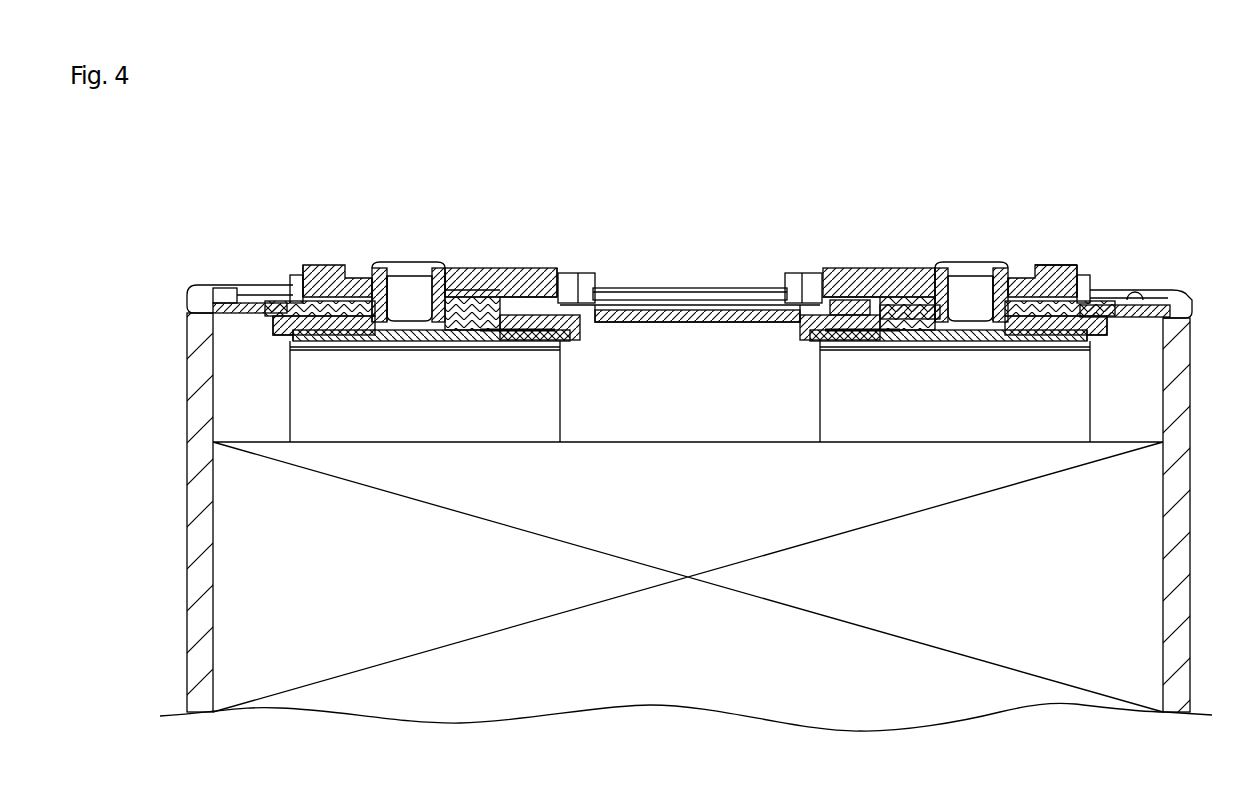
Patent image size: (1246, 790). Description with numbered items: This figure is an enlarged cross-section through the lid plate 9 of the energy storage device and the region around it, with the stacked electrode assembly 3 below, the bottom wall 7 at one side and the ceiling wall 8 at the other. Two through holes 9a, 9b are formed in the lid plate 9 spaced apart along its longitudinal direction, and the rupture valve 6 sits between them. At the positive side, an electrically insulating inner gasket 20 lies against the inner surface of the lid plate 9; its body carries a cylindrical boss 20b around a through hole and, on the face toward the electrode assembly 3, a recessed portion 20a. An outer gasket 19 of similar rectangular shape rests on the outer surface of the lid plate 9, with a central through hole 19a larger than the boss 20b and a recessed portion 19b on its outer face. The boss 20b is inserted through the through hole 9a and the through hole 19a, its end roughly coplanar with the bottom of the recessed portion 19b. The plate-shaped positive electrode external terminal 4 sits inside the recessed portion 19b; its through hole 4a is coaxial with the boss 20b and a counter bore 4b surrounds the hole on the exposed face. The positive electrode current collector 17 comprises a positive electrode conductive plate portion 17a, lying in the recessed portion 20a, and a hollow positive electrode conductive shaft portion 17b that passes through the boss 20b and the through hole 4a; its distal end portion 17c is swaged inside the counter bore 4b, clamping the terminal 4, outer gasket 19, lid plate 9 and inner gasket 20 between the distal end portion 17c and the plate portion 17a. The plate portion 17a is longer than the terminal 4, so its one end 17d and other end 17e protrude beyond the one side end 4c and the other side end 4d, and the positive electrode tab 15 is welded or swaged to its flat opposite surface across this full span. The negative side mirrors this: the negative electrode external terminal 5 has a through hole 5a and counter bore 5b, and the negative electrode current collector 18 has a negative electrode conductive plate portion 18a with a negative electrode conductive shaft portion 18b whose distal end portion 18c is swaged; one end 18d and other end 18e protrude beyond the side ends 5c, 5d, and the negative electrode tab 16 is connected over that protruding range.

The stacked electrode assembly 3 is at (558, 690).
The positive electrode external terminal 4 is at (1055, 275).
The through hole 4a is at (1002, 276).
The counter bore 4b is at (1042, 268).
The one side end 4c is at (835, 270).
The other side end 4d is at (1090, 268).
The negative electrode external terminal 5 is at (318, 265).
The through hole 5a is at (442, 275).
The counter bore 5b is at (470, 278).
The one side end 5c is at (306, 265).
The other side end 5d is at (560, 268).
The rupture valve 6 is at (683, 292).
The bottom wall 7 is at (188, 392).
The ceiling wall 8 is at (1192, 384).
The lid plate 9 is at (1188, 296).
The through hole 9a is at (905, 320).
The through hole 9b is at (455, 290).
The positive electrode tab 15 is at (1090, 414).
The negative electrode tab 16 is at (562, 420).
The positive electrode current collector 17 is at (990, 258).
The positive electrode conductive plate portion 17a is at (870, 337).
The positive electrode conductive shaft portion 17b is at (966, 276).
The distal end portion 17c is at (937, 275).
The one end 17d is at (855, 333).
The other end 17e is at (1085, 345).
The negative electrode current collector 18 is at (420, 258).
The negative electrode conductive plate portion 18a is at (540, 338).
The negative electrode conductive shaft portion 18b is at (395, 268).
The distal end portion 18c is at (378, 280).
The one end 18d is at (295, 347).
The other end 18e is at (560, 330).
The outer gasket 19 is at (296, 276).
The through hole 19a is at (485, 293).
The recessed portion 19b is at (545, 275).
The inner gasket 20 is at (285, 330).
The recessed portion 20a is at (286, 343).
The boss 20b is at (352, 290).